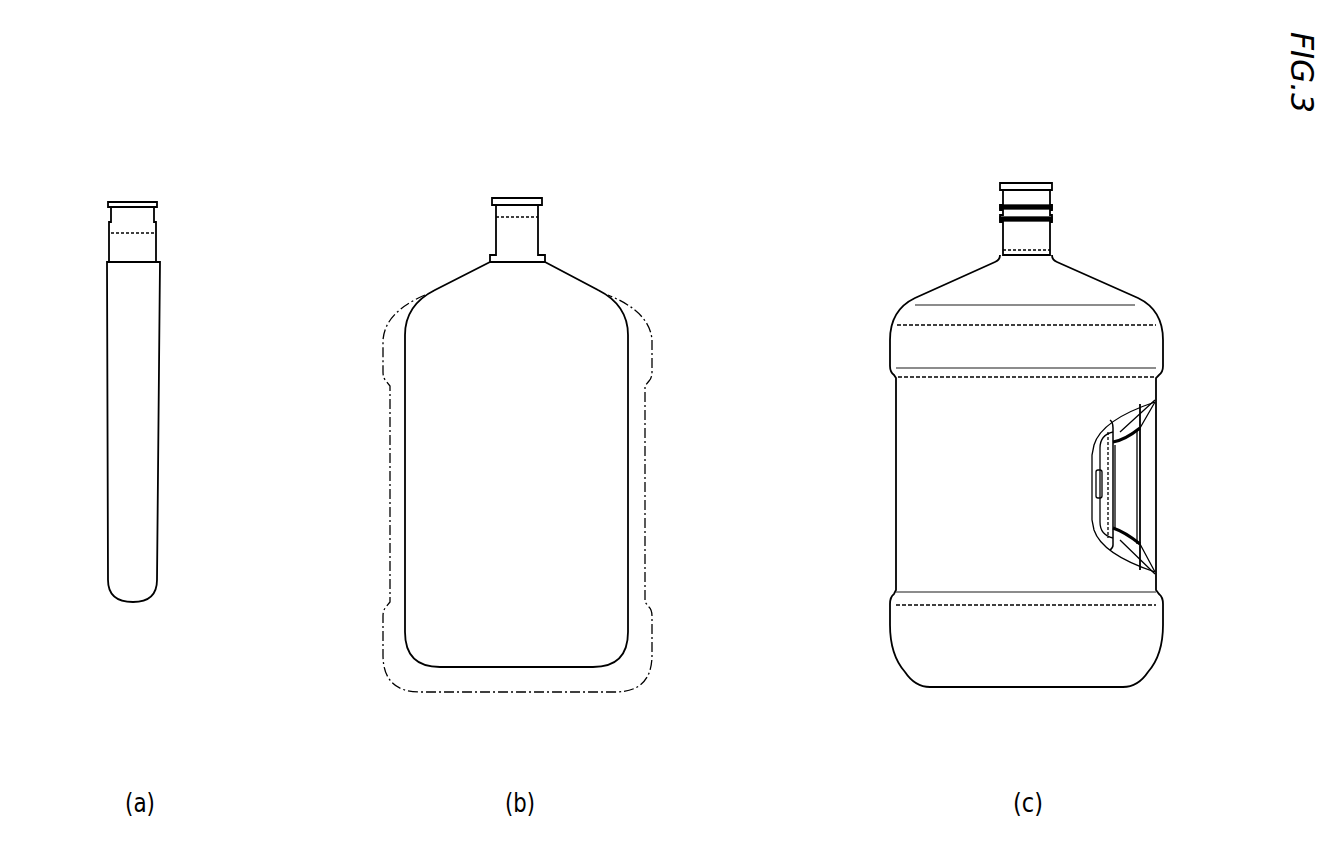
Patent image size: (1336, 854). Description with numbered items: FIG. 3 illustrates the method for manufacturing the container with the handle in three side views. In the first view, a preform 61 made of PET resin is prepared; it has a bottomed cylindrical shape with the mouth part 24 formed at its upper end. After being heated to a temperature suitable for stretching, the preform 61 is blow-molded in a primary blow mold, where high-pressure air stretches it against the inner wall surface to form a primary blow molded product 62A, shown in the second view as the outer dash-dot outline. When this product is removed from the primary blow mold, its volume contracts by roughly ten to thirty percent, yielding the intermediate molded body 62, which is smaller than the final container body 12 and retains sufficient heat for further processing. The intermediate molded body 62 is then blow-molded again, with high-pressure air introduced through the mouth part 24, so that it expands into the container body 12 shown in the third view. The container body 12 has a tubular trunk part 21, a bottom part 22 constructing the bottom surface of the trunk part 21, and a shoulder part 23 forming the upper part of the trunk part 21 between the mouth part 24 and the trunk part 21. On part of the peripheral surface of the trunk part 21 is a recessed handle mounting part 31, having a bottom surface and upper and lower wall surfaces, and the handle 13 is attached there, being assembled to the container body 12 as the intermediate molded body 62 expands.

The container body 12 is at (1020, 488).
The handle 13 is at (1152, 453).
The trunk part 21 is at (912, 437).
The bottom part 22 is at (1058, 688).
The shoulder part 23 is at (960, 277).
The mouth part 24 is at (136, 200).
The handle mounting part 31 is at (1135, 506).
The preform 61 is at (170, 300).
The intermediate molded body 62 is at (543, 500).
The primary blow molded product 62A is at (622, 692).